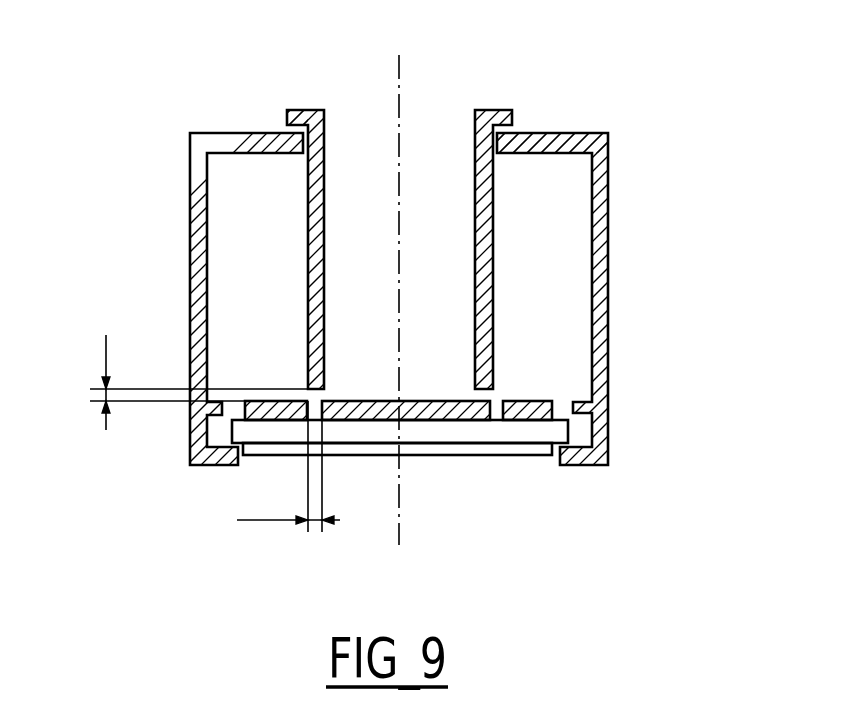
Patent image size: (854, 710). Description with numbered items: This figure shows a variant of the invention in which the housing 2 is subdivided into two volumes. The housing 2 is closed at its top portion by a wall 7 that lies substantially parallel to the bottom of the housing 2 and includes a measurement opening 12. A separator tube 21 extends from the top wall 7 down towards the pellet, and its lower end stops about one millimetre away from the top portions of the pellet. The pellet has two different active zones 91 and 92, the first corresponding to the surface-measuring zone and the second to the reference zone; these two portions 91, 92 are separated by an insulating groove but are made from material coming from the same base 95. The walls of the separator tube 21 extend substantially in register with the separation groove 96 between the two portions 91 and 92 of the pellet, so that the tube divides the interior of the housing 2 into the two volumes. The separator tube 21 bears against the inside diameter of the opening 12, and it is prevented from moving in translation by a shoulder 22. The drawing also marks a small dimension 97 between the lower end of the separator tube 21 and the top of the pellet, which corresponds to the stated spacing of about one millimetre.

The housing 2 is at (427, 260).
The wall 7 is at (565, 148).
The measurement opening 12 is at (430, 143).
The separator tube 21 is at (427, 240).
The shoulder 22 is at (300, 125).
The active zone 91 is at (445, 421).
The active zone 92 is at (543, 455).
The base 95 is at (492, 433).
The separation groove 96 is at (288, 466).
The clearance height 97 is at (193, 379).